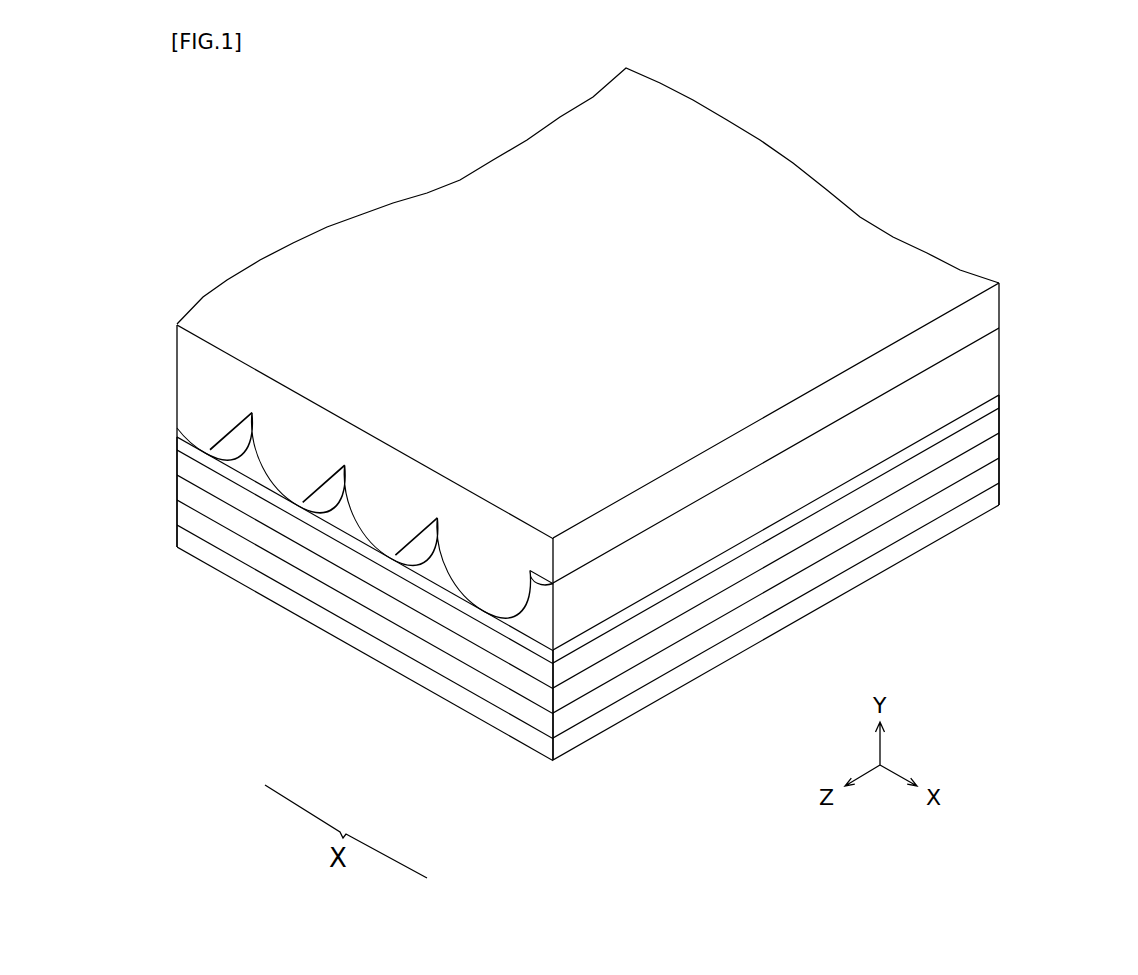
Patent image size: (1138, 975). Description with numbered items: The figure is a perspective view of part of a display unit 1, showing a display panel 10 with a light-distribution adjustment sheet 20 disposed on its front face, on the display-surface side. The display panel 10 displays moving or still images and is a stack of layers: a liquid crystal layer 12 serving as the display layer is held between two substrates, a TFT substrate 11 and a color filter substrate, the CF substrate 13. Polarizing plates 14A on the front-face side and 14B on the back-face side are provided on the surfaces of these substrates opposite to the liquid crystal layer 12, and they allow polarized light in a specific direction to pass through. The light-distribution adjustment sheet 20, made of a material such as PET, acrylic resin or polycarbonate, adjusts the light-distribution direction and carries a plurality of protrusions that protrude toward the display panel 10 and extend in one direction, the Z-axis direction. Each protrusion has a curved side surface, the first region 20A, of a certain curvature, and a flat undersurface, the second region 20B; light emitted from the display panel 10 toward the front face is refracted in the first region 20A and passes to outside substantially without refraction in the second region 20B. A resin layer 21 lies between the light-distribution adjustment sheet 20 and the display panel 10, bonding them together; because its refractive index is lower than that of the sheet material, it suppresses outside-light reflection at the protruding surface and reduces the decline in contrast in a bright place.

The display unit 1 is at (904, 149).
The display panel 10 is at (1077, 387).
The TFT substrate 11 is at (993, 480).
The liquid crystal layer 12 is at (993, 452).
The CF substrate 13 is at (993, 426).
The polarizing plate 14A is at (993, 400).
The polarizing plate 14B is at (993, 505).
The light-distribution adjustment sheet 20 is at (993, 308).
The first region 20A is at (377, 732).
The second region 20B is at (375, 560).
The resin layer 21 is at (993, 357).